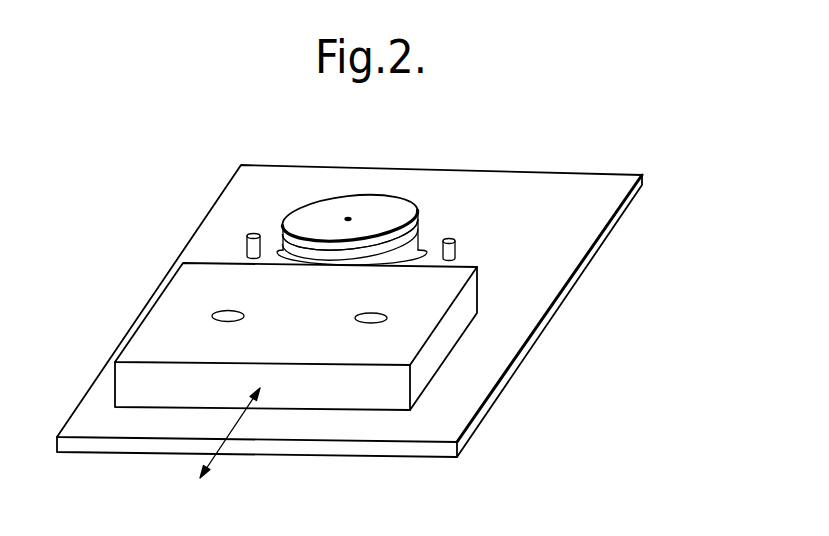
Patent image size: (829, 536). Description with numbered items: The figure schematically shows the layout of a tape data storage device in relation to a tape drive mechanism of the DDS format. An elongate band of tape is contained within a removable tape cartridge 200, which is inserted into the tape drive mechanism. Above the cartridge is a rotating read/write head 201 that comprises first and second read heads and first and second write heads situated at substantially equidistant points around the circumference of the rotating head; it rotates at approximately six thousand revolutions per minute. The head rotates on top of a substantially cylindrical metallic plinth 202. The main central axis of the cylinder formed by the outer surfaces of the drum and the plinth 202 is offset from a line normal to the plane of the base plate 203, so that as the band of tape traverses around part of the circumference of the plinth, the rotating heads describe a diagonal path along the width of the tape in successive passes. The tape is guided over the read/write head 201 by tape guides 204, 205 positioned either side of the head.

The tape cartridge 200 is at (321, 330).
The rotating read/write head 201 is at (335, 210).
The cylindrical metallic plinth 202 is at (407, 238).
The base plate 203 is at (625, 210).
The tape guide 204 is at (247, 246).
The tape guide 205 is at (457, 248).